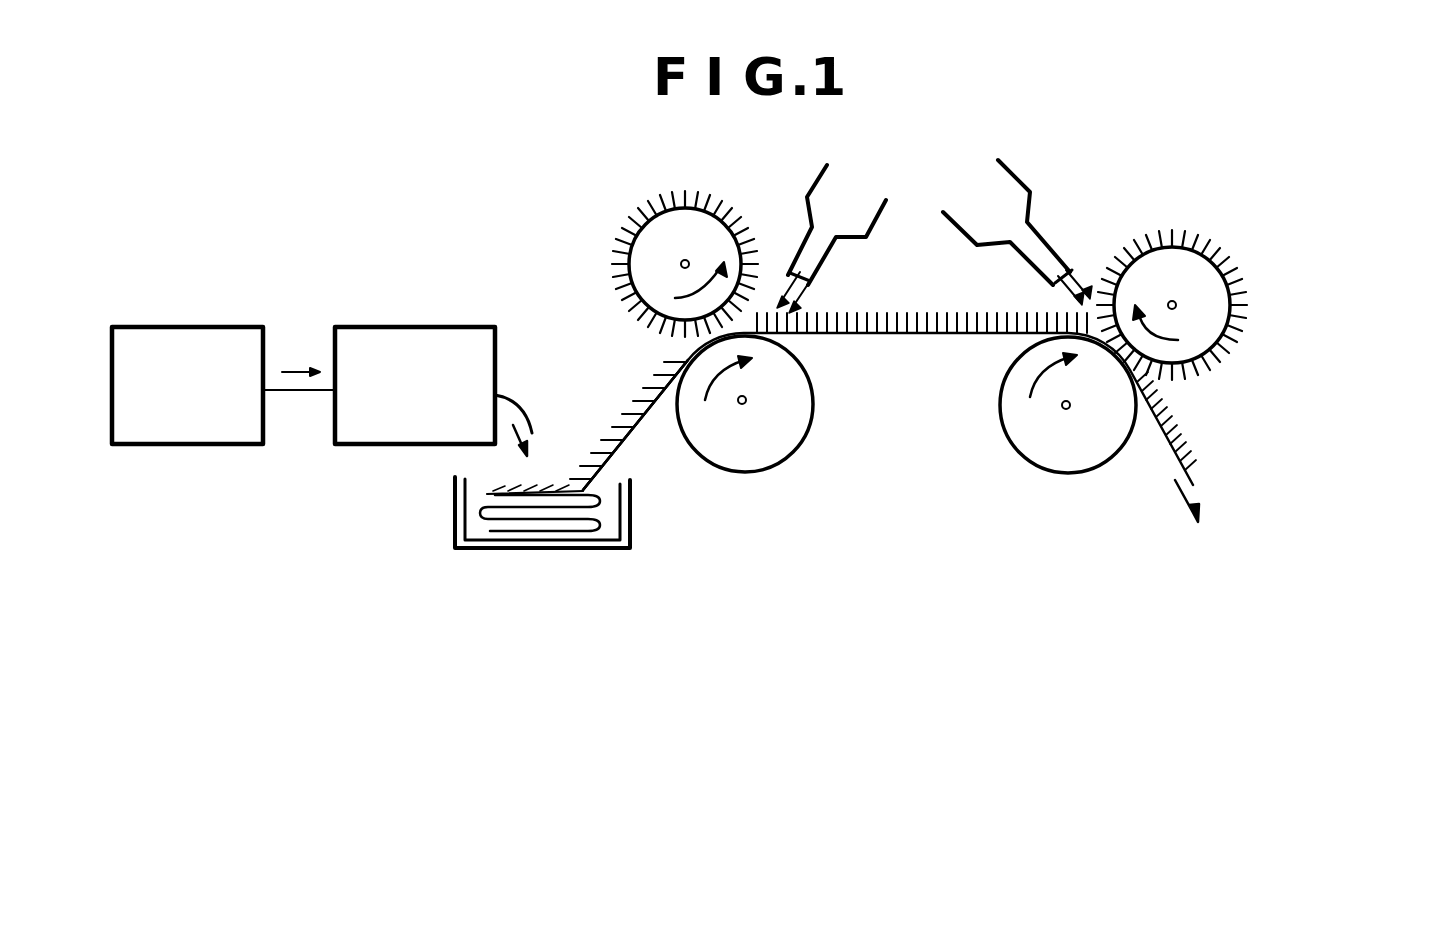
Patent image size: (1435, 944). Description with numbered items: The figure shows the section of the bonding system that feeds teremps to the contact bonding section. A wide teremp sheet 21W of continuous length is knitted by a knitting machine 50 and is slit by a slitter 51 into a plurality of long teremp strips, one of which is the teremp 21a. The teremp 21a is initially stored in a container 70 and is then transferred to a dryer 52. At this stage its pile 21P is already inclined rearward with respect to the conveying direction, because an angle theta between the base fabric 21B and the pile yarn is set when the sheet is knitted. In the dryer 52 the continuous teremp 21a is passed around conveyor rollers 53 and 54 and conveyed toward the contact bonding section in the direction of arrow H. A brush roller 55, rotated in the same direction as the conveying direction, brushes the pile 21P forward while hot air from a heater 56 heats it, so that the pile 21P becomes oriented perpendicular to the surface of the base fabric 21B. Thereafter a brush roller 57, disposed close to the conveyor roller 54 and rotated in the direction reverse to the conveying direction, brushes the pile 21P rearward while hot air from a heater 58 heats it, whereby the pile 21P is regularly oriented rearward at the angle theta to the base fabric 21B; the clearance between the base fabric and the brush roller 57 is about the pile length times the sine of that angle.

The knitting machine 50 is at (255, 325).
The slitter 51 is at (459, 325).
The wide teremp sheet 21W is at (295, 392).
The pile 21P is at (633, 410).
The base fabric 21B is at (635, 428).
The container 70 is at (568, 548).
The dryer 52 is at (935, 495).
The conveyor roller 53 is at (778, 452).
The conveyor roller 54 is at (1076, 462).
The brush roller 55 is at (655, 240).
The heater 56 is at (827, 197).
The brush roller 57 is at (1168, 264).
The heater 58 is at (1030, 187).
The arrow H is at (928, 348).
The teremp 21a is at (978, 340).